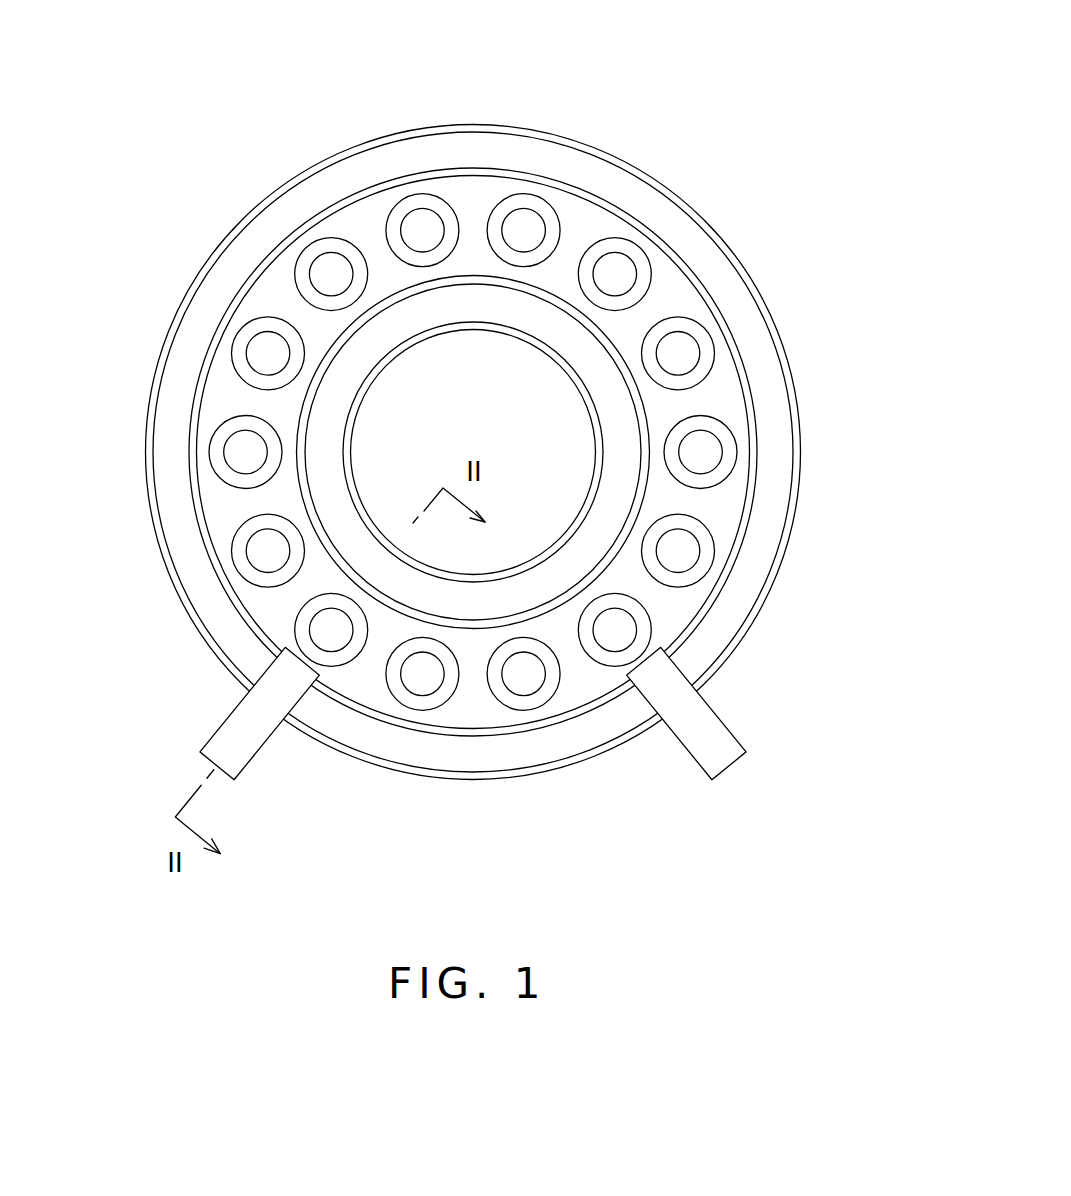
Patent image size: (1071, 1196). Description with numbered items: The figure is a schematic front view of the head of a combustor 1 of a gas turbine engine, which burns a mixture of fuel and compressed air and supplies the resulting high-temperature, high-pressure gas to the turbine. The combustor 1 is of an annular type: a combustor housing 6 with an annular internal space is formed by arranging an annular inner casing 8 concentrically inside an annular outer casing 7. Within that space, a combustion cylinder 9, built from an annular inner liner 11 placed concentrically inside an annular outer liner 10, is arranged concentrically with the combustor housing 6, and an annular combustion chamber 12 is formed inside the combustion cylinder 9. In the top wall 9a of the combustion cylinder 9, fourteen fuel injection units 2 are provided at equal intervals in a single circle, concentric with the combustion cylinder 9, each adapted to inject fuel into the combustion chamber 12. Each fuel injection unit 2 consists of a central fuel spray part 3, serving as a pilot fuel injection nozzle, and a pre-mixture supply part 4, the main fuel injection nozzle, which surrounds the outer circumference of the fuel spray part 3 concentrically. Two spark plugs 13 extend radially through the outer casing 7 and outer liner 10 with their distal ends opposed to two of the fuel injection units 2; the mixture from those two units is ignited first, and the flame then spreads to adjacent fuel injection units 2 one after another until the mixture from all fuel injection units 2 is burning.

The combustor 1 is at (472, 446).
The fuel injection unit 2 is at (472, 362).
The fuel spray part 3 is at (518, 217).
The pre-mixture supply part 4 is at (542, 208).
The combustor housing 6 is at (473, 502).
The outer casing 7 is at (568, 760).
The inner casing 8 is at (540, 562).
The combustion cylinder 9 is at (473, 523).
The top wall 9a is at (472, 702).
The outer liner 10 is at (400, 723).
The inner liner 11 is at (380, 600).
The combustion chamber 12 is at (668, 300).
The spark plug 13 is at (220, 728).